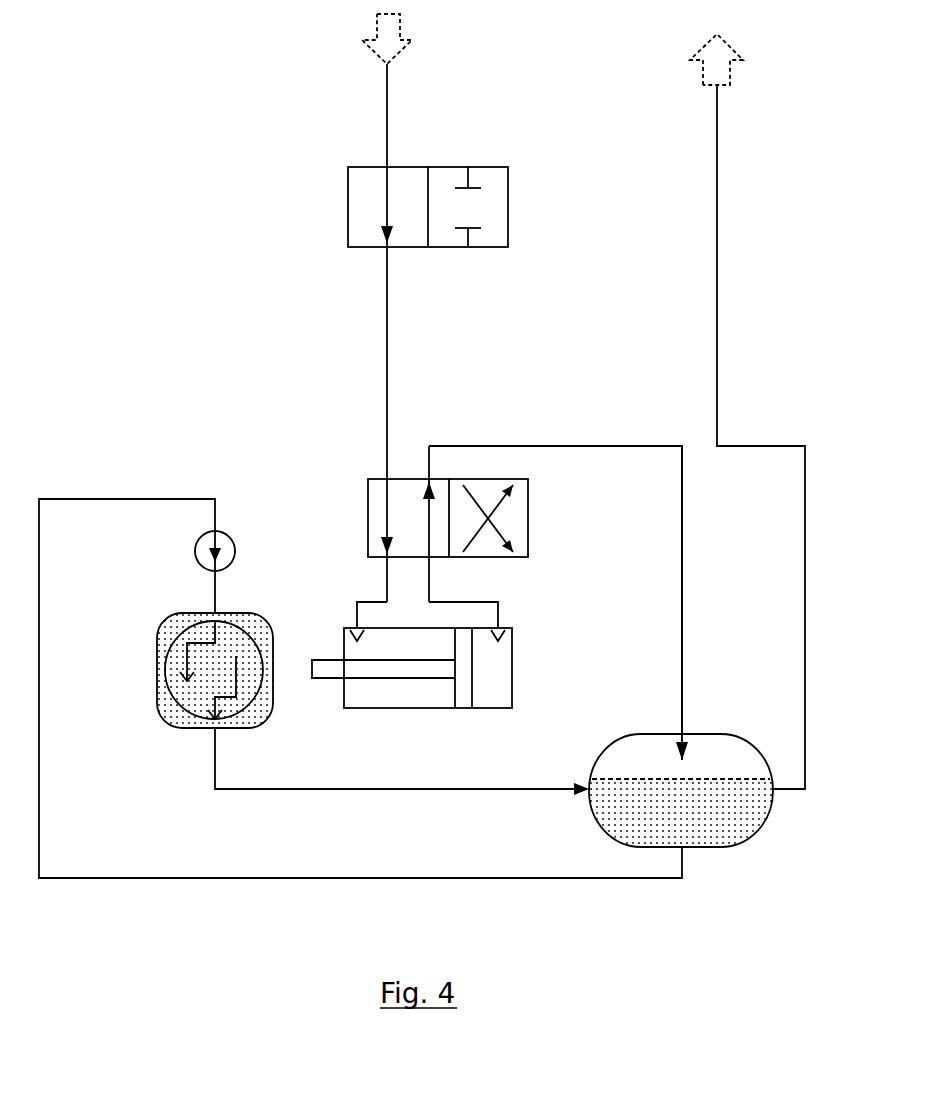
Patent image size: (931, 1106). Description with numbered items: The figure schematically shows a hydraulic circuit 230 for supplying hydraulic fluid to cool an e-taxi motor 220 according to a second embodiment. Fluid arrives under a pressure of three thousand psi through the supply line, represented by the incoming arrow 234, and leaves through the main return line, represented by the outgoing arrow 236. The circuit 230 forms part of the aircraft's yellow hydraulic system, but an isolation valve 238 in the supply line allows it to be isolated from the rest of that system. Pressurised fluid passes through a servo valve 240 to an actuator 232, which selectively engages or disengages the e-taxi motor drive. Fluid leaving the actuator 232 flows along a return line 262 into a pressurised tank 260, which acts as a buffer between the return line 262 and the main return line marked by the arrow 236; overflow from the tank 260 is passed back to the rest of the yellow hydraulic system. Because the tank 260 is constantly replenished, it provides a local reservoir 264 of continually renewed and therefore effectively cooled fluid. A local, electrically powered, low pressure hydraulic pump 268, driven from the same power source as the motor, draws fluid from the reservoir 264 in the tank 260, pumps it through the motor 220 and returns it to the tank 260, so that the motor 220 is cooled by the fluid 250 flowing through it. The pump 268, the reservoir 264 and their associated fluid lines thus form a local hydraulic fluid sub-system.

The hydraulic circuit 230 is at (203, 88).
The incoming arrow 234 is at (372, 54).
The outgoing arrow 236 is at (738, 51).
The isolation valve 238 is at (508, 217).
The servo valve 240 is at (528, 519).
The actuator 232 is at (497, 683).
The hydraulic pump 268 is at (232, 535).
The e-taxi motor 220 is at (165, 622).
The fluid 250 is at (171, 682).
The return line 262 is at (686, 614).
The pressurised tank 260 is at (733, 827).
The local reservoir 264 is at (604, 819).